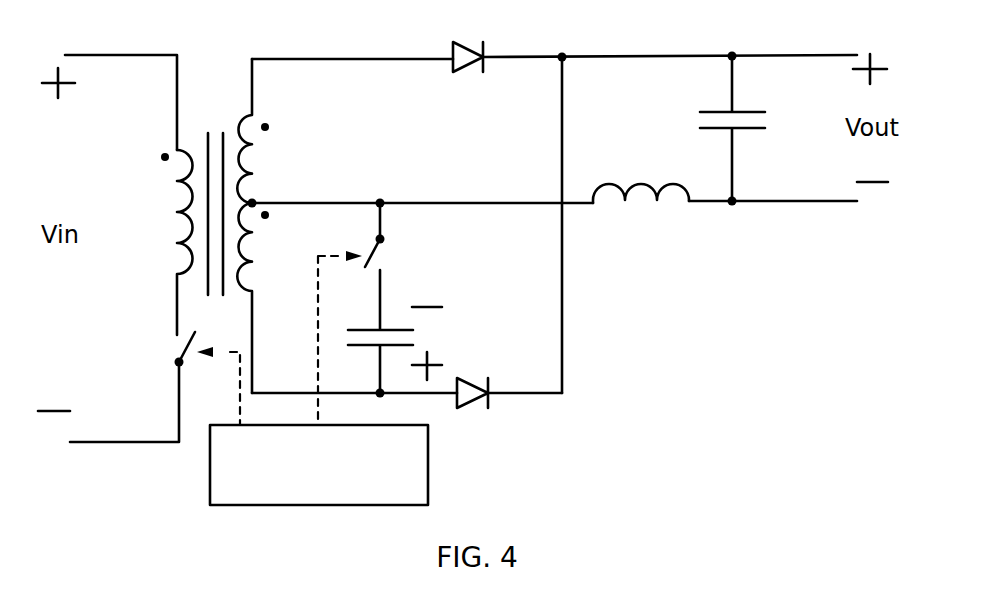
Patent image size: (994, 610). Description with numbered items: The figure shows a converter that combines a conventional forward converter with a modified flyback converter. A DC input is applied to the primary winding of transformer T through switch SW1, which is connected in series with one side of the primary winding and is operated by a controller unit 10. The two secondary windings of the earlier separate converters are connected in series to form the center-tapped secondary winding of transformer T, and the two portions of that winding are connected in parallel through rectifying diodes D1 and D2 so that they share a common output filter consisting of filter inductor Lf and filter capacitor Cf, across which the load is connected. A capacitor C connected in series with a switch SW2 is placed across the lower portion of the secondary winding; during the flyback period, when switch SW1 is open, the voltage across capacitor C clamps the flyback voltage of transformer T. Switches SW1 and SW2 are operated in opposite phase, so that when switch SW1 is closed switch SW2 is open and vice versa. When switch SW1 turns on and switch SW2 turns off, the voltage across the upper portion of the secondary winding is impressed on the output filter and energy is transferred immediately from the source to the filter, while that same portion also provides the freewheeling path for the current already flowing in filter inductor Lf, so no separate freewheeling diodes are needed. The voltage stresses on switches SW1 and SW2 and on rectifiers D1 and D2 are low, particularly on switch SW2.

The controller unit 10 is at (428, 477).
The transformer T is at (210, 226).
The switch SW1 is at (159, 348).
The switch SW2 is at (397, 235).
The rectifying diode D1 is at (472, 76).
The rectifying diode D2 is at (478, 412).
The capacitor C is at (406, 331).
The filter capacitor Cf is at (714, 128).
The filter inductor Lf is at (641, 214).